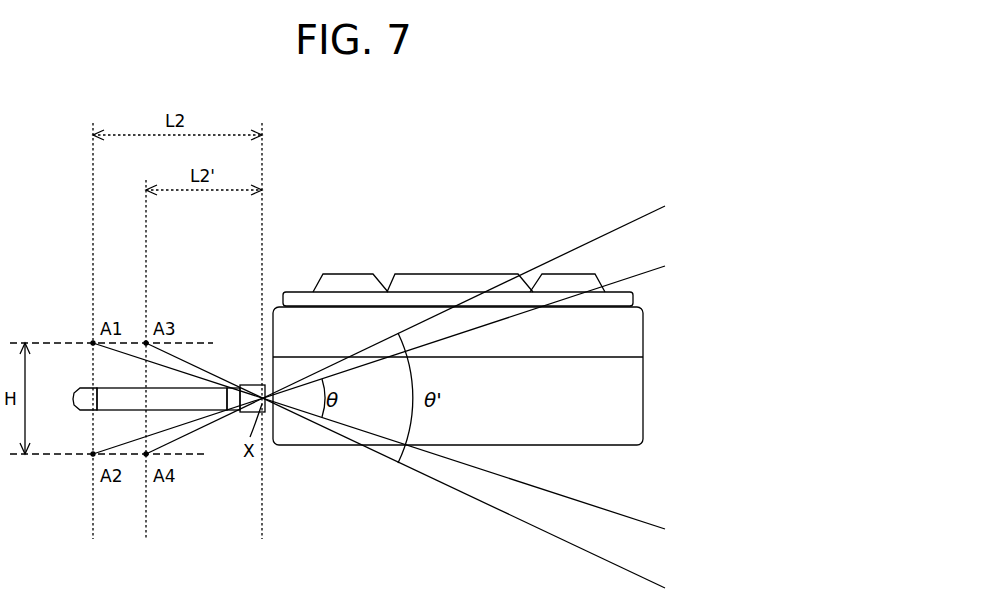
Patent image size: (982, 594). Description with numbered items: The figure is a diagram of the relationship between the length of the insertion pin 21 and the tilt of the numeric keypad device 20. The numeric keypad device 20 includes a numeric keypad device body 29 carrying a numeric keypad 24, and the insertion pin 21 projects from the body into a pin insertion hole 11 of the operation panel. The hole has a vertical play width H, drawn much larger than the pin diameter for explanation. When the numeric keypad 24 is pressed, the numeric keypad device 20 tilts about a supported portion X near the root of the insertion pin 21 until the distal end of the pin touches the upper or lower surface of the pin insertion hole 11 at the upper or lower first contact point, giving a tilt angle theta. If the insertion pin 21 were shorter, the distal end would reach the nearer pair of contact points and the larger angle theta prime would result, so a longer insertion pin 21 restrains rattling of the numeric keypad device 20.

The pin insertion hole 11 is at (169, 346).
The numeric keypad device 20 is at (497, 294).
The insertion pin 21 is at (202, 400).
The numeric keypad 24 is at (447, 273).
The numeric keypad device body 29 is at (627, 337).